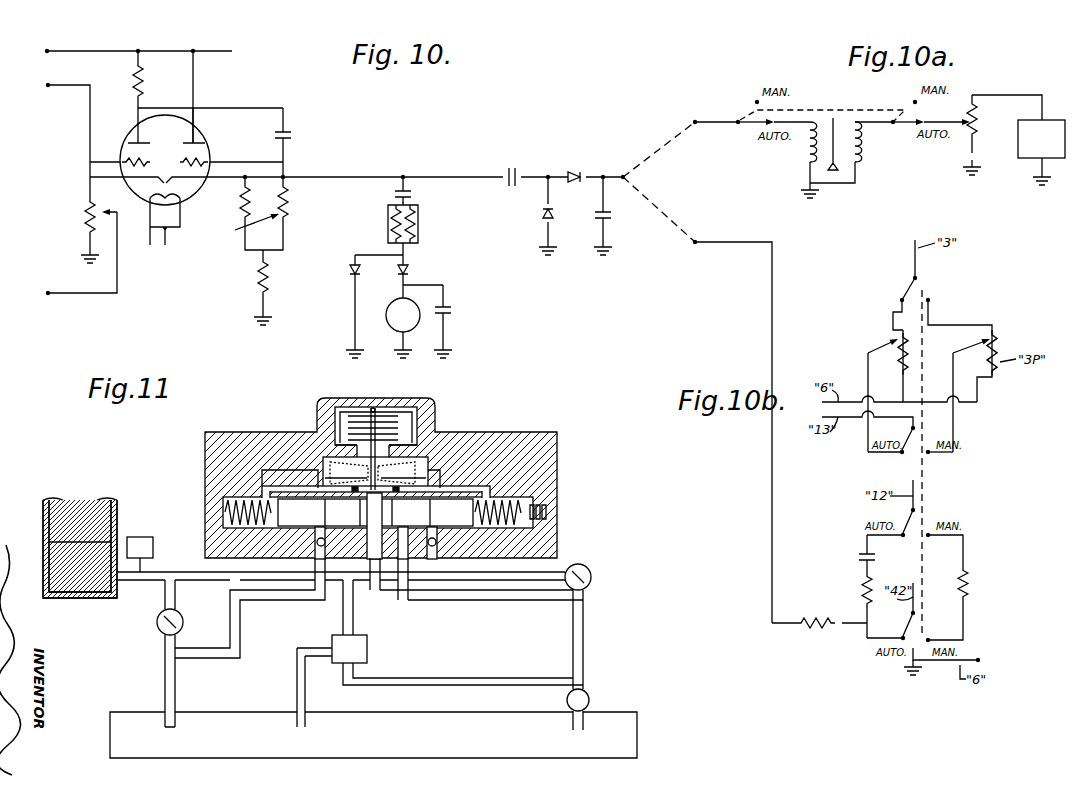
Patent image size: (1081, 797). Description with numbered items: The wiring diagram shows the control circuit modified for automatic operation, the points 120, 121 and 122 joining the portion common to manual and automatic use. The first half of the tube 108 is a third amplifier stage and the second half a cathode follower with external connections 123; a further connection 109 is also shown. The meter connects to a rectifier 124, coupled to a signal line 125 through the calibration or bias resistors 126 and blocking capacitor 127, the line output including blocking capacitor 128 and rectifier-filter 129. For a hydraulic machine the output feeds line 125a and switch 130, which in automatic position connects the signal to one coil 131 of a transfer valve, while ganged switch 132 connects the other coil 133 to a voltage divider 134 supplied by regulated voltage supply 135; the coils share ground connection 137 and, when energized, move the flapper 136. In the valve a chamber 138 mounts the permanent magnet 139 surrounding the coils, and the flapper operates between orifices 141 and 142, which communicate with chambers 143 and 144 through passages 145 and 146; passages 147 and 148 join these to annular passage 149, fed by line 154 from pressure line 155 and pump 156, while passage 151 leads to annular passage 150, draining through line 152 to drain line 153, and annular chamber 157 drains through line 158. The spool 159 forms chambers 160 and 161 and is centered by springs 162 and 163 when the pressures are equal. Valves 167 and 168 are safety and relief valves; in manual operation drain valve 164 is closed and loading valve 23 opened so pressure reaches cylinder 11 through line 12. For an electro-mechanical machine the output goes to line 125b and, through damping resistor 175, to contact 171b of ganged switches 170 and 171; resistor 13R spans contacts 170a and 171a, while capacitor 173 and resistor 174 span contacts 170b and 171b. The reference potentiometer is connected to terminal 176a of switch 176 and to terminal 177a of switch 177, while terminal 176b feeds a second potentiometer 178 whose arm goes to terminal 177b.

In FIG. 10, the point 120 is at (50, 51).
In FIG. 10, the point 121 is at (48, 85).
In FIG. 10, the point 122 is at (50, 283).
In FIG. 10, the external connections 123 is at (288, 214).
In FIG. 10, the rectifier 124 is at (386, 280).
In FIG. 10, the signal line 125 is at (440, 176).
In FIG. 10, the calibration or bias resistors 126 is at (420, 234).
In FIG. 10, the blocking capacitor 127 is at (416, 195).
In FIG. 10, the blocking capacitor 128 is at (518, 172).
In FIG. 10, the rectifier-filter 129 is at (552, 208).
In FIG. 10, the tube 108 is at (207, 140).
In FIG. 10, the conductor 109 is at (117, 277).
In FIG. 10A, the line 125a is at (702, 119).
In FIG. 10B, the line 125b is at (702, 242).
In FIG. 10A, the switch 130 is at (744, 137).
In FIG. 10A, the coil 131 is at (800, 150).
In FIG. 11, the coil 131 is at (360, 415).
In FIG. 10A, the switch 132 is at (908, 128).
In FIG. 11, the switch 132 is at (358, 448).
In FIG. 10A, the coil 133 is at (860, 148).
In FIG. 10A, the voltage divider 134 is at (978, 114).
In FIG. 10A, the regulated voltage supply 135 is at (1041, 145).
In FIG. 10A, the flapper 136 is at (836, 121).
In FIG. 11, the flapper 136 is at (382, 448).
In FIG. 10A, the common ground connection 137 is at (846, 184).
In FIG. 11, the chamber 138 is at (332, 464).
In FIG. 11, the permanent magnet 139 is at (374, 410).
In FIG. 11, the orifice 141 is at (330, 478).
In FIG. 11, the orifice 142 is at (436, 470).
In FIG. 11, the chamber 143 is at (258, 484).
In FIG. 11, the chamber 144 is at (535, 504).
In FIG. 11, the passage 145 is at (312, 472).
In FIG. 11, the passage 146 is at (492, 488).
In FIG. 11, the passage 147 is at (300, 472).
In FIG. 11, the passage 148 is at (488, 470).
In FIG. 11, the annular passage 149 is at (388, 562).
In FIG. 11, the annular passage 150 is at (320, 500).
In FIG. 11, the passage 151 is at (330, 510).
In FIG. 11, the line 152 is at (240, 640).
In FIG. 11, the drain line 153 is at (165, 684).
In FIG. 11, the line 154 is at (478, 598).
In FIG. 11, the pressure line 155 is at (585, 640).
In FIG. 11, the pump 156 is at (590, 698).
In FIG. 11, the annular chamber 157 is at (452, 545).
In FIG. 11, the line 158 is at (430, 552).
In FIG. 11, the spool 159 is at (404, 513).
In FIG. 11, the chamber 160 is at (350, 530).
In FIG. 11, the chamber 161 is at (425, 506).
In FIG. 11, the spring 162 is at (230, 500).
In FIG. 11, the spring 163 is at (520, 543).
In FIG. 11, the drain valve 164 is at (157, 622).
In FIG. 11, the safety valve 167 is at (140, 554).
In FIG. 11, the relief valve 168 is at (440, 653).
In FIG. 10B, the gang switch 170 is at (932, 519).
In FIG. 10B, the contact 170a is at (929, 539).
In FIG. 10B, the contact 170b is at (902, 540).
In FIG. 10B, the gang switch 171 is at (912, 652).
In FIG. 10B, the contact 171a is at (938, 631).
In FIG. 10B, the contact 171b is at (900, 634).
In FIG. 10B, the capacitor 173 is at (860, 556).
In FIG. 10B, the resistor 174 is at (864, 584).
In FIG. 10B, the damping resistor 175 is at (822, 630).
In FIG. 10B, the switch 176 is at (924, 289).
In FIG. 10B, the terminal 176a is at (932, 301).
In FIG. 10B, the terminal 176b is at (898, 302).
In FIG. 10B, the switch 177 is at (932, 440).
In FIG. 10B, the terminal 177a is at (928, 456).
In FIG. 10B, the terminal 177b is at (896, 455).
In FIG. 10B, the second potentiometer 178 is at (893, 331).
In FIG. 10B, the resistor 13R is at (968, 583).
In FIG. 11, the cylinder 11 is at (80, 548).
In FIG. 11, the line 12 is at (285, 580).
In FIG. 11, the loading valve 23 is at (592, 578).